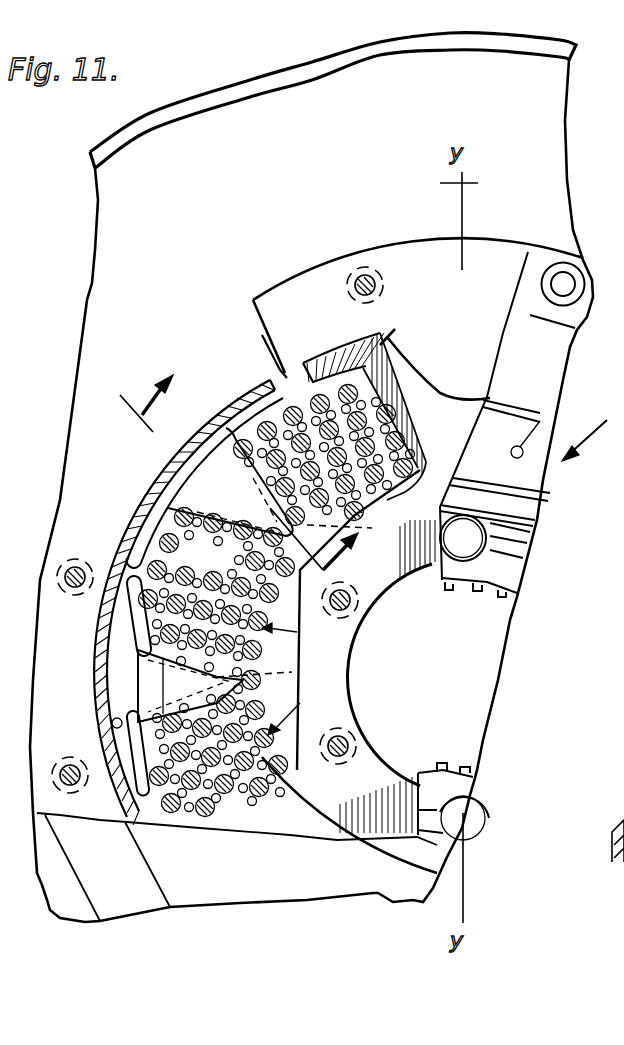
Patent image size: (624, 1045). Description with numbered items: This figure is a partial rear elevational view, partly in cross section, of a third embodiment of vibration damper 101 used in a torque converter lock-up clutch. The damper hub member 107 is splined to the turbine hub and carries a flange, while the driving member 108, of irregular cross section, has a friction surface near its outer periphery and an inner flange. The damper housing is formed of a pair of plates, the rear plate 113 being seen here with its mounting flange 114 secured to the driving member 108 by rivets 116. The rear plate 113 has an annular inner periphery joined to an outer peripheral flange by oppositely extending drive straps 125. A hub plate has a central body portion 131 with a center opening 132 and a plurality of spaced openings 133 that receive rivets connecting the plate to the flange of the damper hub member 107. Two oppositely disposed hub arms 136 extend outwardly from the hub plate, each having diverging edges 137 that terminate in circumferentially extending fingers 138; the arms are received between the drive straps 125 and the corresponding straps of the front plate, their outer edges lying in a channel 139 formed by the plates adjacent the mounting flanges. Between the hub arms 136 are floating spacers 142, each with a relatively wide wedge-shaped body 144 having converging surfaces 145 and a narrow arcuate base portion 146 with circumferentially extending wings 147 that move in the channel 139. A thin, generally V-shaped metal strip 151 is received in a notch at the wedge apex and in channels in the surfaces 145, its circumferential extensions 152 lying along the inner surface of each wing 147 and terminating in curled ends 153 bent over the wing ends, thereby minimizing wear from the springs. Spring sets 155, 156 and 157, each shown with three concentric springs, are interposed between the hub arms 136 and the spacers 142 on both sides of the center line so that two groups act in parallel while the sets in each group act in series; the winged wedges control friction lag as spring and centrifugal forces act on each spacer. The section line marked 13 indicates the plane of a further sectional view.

The vibration damper 101 is at (593, 429).
The damper hub member 107 is at (477, 587).
The driving member 108 is at (542, 200).
The rear plate 113 is at (533, 482).
The mounting flange 114 is at (283, 297).
The rivet 116 is at (366, 266).
The drive strap 125 is at (547, 380).
The central body portion 131 is at (352, 663).
The center opening 132 is at (403, 753).
The spaced opening 133 is at (352, 605).
The hub arm 136 is at (443, 440).
The diverging edge 137 is at (423, 373).
The finger 138 is at (313, 363).
The channel 139 is at (112, 725).
The floating spacer 142 is at (163, 496).
The wedge-shaped body 144 is at (220, 475).
The converging surface 145 is at (130, 652).
The arcuate base portion 146 is at (123, 637).
The wing 147 is at (157, 517).
The metal strip 151 is at (284, 678).
The circumferential extension 152 is at (333, 393).
The curled end 153 is at (277, 363).
The spring set 155 is at (386, 341).
The spring set 156 is at (303, 717).
The spring set 157 is at (297, 632).
The section line 13 is at (238, 476).